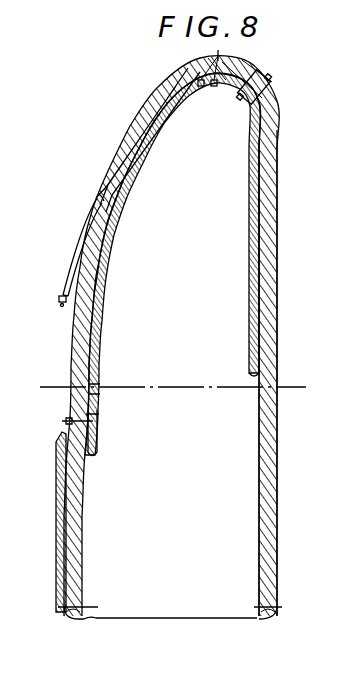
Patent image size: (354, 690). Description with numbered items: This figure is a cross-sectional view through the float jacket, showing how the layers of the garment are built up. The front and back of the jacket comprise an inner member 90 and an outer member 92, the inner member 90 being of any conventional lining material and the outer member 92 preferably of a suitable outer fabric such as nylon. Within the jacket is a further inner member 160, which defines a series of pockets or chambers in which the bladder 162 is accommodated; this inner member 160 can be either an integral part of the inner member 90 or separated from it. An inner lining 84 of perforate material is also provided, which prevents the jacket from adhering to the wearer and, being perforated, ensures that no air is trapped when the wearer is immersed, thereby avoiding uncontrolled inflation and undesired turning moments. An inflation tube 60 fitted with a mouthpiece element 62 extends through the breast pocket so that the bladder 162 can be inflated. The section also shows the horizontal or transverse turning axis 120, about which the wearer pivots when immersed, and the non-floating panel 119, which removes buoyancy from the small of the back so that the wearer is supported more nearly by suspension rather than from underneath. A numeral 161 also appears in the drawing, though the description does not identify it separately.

The inflation tube 60 is at (66, 268).
The mouthpiece element 62 is at (58, 298).
The inner lining 84 is at (248, 143).
The inner member 90 is at (262, 503).
The outer member 92 is at (277, 482).
The non-floating panel 119 is at (272, 415).
The transverse turning axis 120 is at (175, 386).
The inner member 160 is at (97, 412).
The end portion 161 is at (90, 391).
The bladder 162 is at (118, 194).